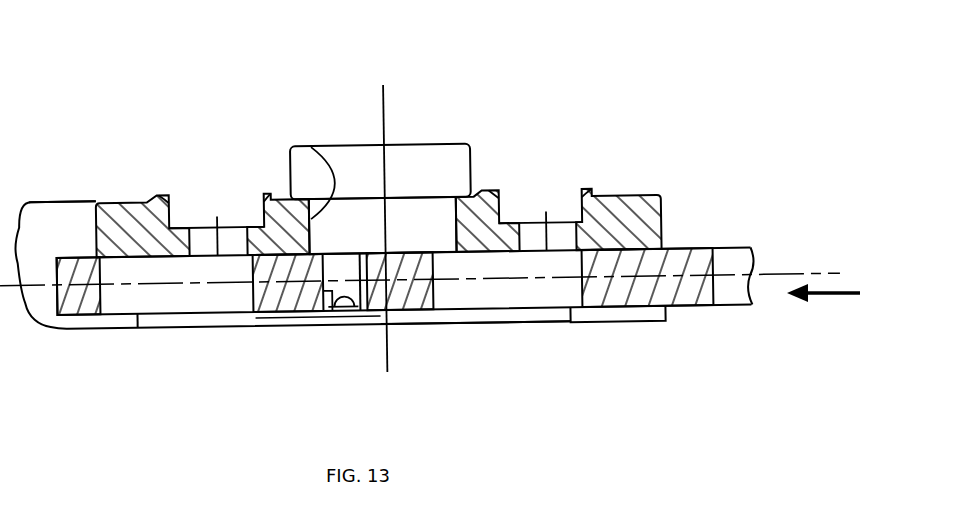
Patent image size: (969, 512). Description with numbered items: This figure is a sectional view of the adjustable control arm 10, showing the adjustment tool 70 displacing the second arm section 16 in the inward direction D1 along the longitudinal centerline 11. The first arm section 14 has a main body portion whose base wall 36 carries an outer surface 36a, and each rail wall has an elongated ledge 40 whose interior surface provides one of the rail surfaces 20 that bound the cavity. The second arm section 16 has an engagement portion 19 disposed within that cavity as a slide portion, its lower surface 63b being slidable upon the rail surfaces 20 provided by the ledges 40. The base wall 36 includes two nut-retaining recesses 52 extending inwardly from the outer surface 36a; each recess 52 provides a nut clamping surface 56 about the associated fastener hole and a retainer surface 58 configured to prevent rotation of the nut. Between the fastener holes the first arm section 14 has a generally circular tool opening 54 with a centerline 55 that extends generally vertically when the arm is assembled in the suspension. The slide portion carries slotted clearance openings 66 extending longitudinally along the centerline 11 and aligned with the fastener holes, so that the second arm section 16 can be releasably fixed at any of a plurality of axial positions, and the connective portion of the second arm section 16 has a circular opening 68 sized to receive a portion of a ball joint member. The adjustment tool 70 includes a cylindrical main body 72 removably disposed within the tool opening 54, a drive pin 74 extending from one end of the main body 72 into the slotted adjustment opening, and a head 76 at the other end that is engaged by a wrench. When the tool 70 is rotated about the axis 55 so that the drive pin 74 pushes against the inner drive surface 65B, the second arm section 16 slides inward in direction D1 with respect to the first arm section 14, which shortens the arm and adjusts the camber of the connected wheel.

The adjustable control arm 10 is at (222, 58).
The longitudinal centerline 11 is at (800, 273).
The first arm section 14 is at (112, 150).
The second arm section 16 is at (738, 197).
The engagement portion 19 is at (420, 320).
The rail surfaces 20 is at (152, 260).
The base wall 36 is at (643, 190).
The outer surface 36a is at (118, 202).
The ledge 40 is at (187, 322).
The nut-retaining recess 52 is at (185, 195).
The tool opening 54 is at (305, 145).
The centerline 55 is at (385, 96).
The nut clamping surface 56 is at (200, 192).
The retainer surface 58 is at (258, 208).
The lower surface 63b is at (270, 313).
The inner drive surface 65B is at (340, 300).
The slotted clearance opening 66 is at (103, 303).
The circular opening 68 is at (718, 290).
The adjustment tool 70 is at (315, 115).
The main body 72 is at (438, 213).
The drive pin 74 is at (350, 290).
The head 76 is at (447, 148).
The inward direction D1 is at (823, 315).